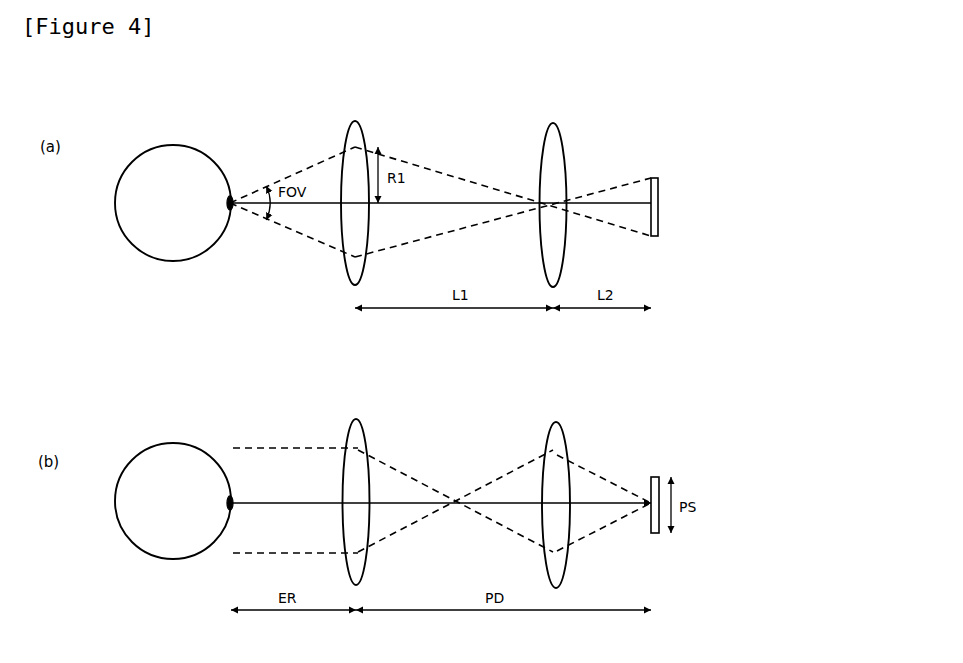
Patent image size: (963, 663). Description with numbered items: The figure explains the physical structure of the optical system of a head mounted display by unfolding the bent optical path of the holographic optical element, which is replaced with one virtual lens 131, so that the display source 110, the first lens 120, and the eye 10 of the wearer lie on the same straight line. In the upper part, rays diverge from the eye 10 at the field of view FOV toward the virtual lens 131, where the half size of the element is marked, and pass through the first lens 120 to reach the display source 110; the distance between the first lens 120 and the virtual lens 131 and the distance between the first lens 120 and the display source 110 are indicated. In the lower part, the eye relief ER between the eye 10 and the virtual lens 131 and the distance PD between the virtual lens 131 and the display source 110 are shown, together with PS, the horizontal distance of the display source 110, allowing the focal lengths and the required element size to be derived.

The eye 10 is at (116, 206).
The display source 110 is at (659, 189).
The first lens 120 is at (566, 153).
The virtual lens 131 is at (366, 143).